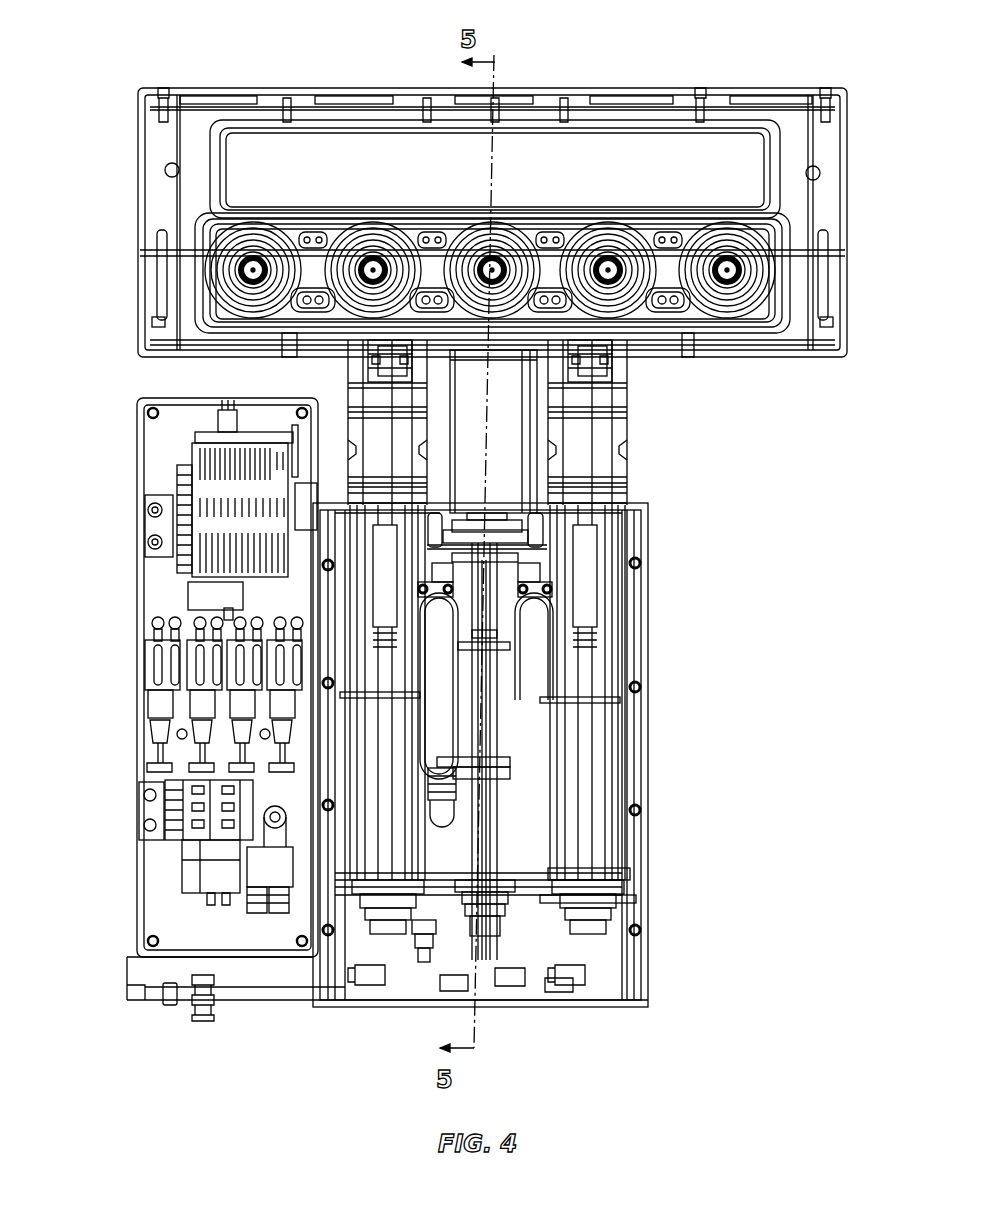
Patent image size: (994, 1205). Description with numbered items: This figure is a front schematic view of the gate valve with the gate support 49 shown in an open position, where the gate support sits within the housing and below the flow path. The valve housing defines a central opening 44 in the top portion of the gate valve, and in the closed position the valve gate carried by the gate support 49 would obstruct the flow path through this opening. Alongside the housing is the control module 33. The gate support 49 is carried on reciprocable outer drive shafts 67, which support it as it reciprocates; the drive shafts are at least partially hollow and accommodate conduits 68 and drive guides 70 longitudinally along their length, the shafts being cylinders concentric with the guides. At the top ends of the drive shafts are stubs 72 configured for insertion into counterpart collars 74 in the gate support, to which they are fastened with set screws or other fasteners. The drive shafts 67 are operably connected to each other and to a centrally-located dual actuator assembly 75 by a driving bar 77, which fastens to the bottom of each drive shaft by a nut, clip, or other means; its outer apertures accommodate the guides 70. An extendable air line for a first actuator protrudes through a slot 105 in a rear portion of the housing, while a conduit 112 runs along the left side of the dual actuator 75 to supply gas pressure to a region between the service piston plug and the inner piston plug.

The control module 33 is at (133, 581).
The central opening 44 is at (278, 148).
The gate support 49 is at (733, 217).
The outer drive shafts 67 is at (603, 583).
The conduits 68 is at (588, 447).
The drive guides 70 is at (595, 747).
The stubs 72 is at (625, 345).
The collars 74 is at (355, 348).
The dual actuator assembly 75 is at (513, 607).
The driving bar 77 is at (600, 925).
The slot 105 is at (452, 707).
The conduit 112 is at (440, 880).